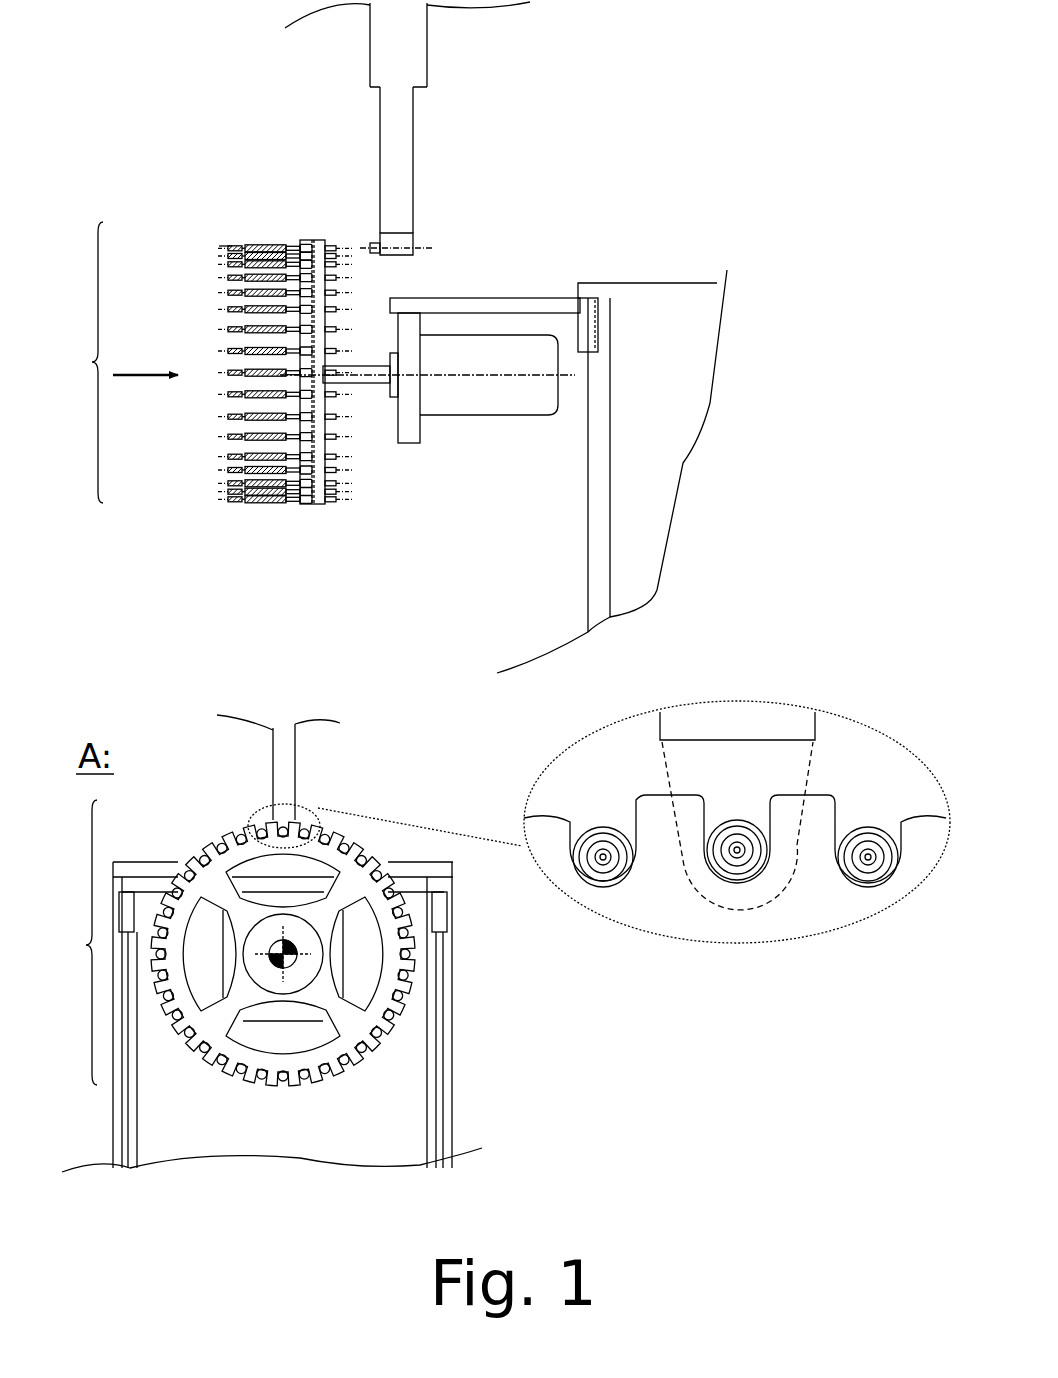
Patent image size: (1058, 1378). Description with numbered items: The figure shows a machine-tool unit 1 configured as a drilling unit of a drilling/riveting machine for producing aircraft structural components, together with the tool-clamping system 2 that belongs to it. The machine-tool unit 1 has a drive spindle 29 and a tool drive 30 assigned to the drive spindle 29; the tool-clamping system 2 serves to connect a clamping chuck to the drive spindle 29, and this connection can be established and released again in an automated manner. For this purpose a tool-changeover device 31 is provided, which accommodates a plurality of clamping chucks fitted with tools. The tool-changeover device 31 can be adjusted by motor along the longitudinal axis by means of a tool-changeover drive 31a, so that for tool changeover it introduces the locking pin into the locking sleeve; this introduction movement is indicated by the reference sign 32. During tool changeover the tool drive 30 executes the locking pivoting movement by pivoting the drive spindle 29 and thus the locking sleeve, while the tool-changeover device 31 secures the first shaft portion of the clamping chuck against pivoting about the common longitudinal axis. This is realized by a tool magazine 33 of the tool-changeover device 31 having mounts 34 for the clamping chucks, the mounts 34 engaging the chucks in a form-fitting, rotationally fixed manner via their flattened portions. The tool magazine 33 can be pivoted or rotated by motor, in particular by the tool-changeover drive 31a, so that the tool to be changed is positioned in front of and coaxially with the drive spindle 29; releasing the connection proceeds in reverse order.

The machine-tool unit 1 is at (466, 183).
The tool-clamping system 2 is at (353, 198).
The drive spindle 29 is at (378, 252).
The tool drive 30 is at (410, 243).
The tool-changeover device 31 is at (191, 653).
The tool-changeover drive 31a is at (487, 390).
The introduction movement 32 is at (356, 228).
The tool magazine 33 is at (322, 505).
The mounts 34 is at (768, 818).